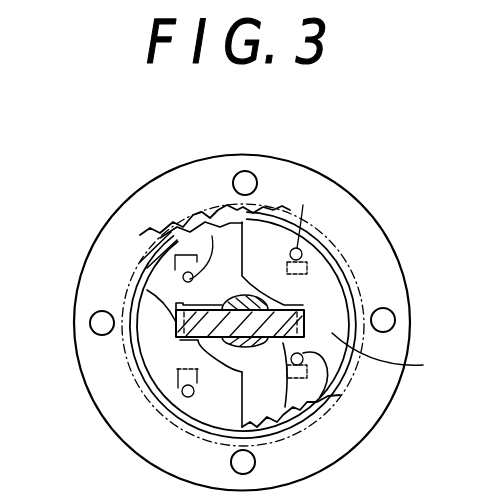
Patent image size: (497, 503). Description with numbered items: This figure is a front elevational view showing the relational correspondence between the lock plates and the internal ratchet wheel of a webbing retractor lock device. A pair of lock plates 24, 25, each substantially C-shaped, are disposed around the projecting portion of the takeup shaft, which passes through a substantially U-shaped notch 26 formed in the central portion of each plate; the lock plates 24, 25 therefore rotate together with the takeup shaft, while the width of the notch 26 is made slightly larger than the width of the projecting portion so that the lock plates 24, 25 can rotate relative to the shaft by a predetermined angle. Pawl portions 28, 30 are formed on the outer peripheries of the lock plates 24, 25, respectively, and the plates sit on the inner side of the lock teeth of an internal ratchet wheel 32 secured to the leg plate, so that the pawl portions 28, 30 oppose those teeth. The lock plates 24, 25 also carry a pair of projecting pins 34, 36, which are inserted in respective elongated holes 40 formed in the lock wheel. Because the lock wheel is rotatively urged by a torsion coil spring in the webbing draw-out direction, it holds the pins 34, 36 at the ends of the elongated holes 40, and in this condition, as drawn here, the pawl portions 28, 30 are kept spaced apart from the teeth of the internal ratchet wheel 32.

The lock plate 24 is at (157, 352).
The lock plate 25 is at (397, 352).
The notch 26 is at (140, 275).
The pawl portion 28 is at (172, 228).
The pawl portion 30 is at (303, 421).
The internal ratchet wheel 32 is at (397, 293).
The pin 34 is at (175, 286).
The pin 36 is at (352, 383).
The elongated hole 40 is at (211, 218).